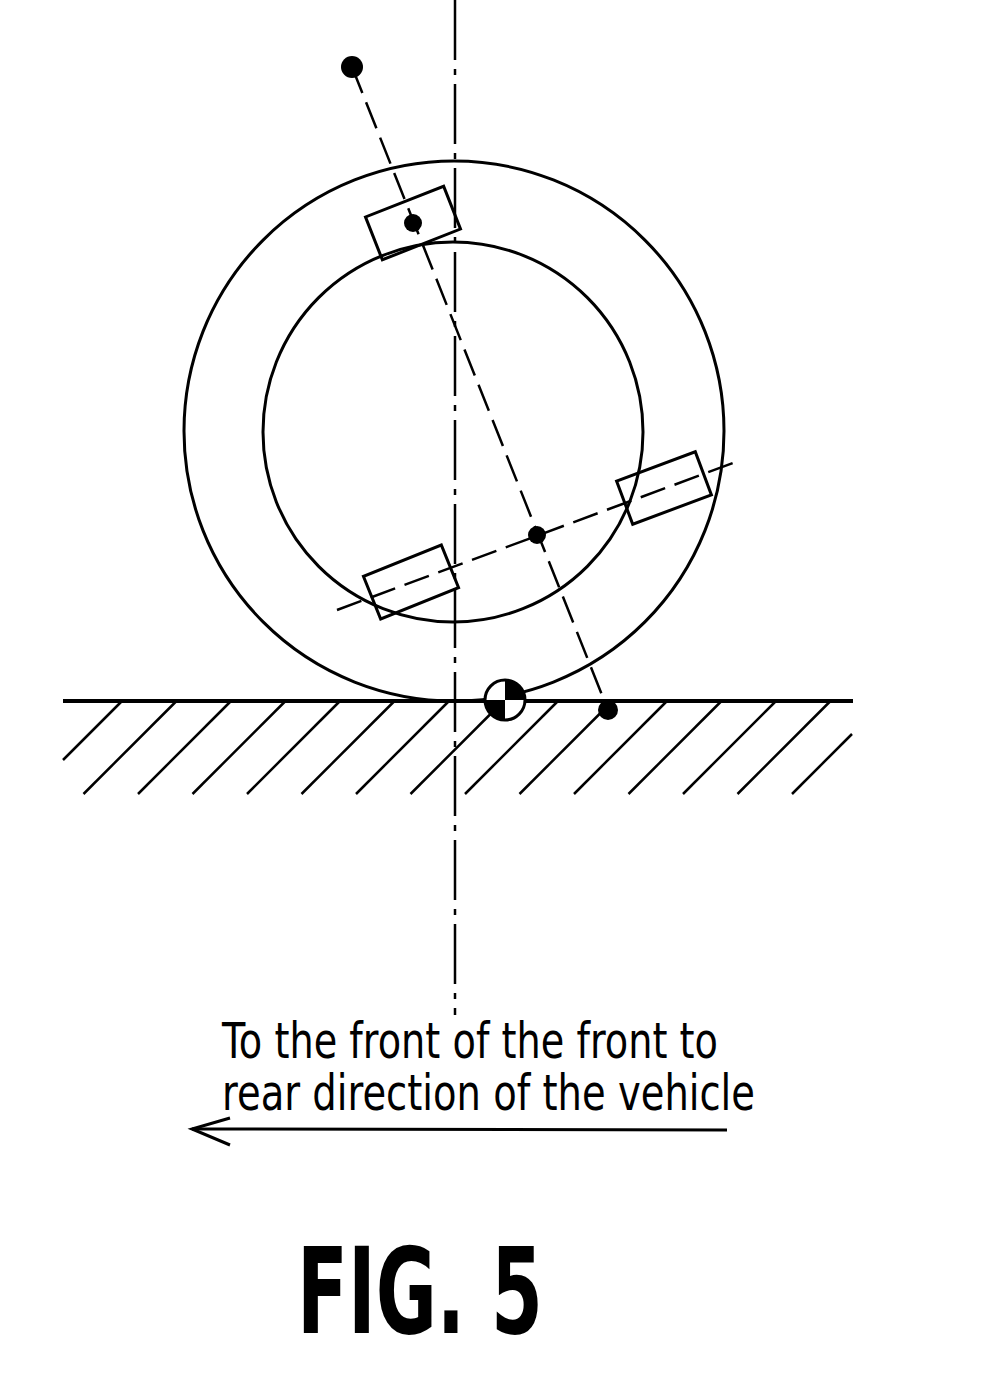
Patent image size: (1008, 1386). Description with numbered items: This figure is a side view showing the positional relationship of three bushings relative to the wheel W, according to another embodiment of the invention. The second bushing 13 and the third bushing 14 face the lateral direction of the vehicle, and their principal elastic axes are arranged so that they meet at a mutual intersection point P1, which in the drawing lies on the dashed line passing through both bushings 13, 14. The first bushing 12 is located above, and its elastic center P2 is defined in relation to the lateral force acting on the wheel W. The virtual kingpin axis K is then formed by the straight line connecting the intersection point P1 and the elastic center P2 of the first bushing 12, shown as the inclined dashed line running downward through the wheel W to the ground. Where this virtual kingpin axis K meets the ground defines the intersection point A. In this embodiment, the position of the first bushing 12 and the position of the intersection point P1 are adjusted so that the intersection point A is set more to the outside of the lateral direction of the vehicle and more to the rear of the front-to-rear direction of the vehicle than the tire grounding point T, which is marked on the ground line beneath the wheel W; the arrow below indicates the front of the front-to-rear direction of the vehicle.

The wheel W is at (708, 322).
The virtual kingpin axis K is at (477, 382).
The first bushing 12 is at (375, 240).
The second bushing 13 is at (398, 568).
The third bushing 14 is at (685, 503).
The intersection point P1 is at (543, 540).
The elastic center P2 is at (452, 212).
The tire grounding point T is at (520, 712).
The intersection point between the ground and the virtual kingpin axis A is at (610, 716).